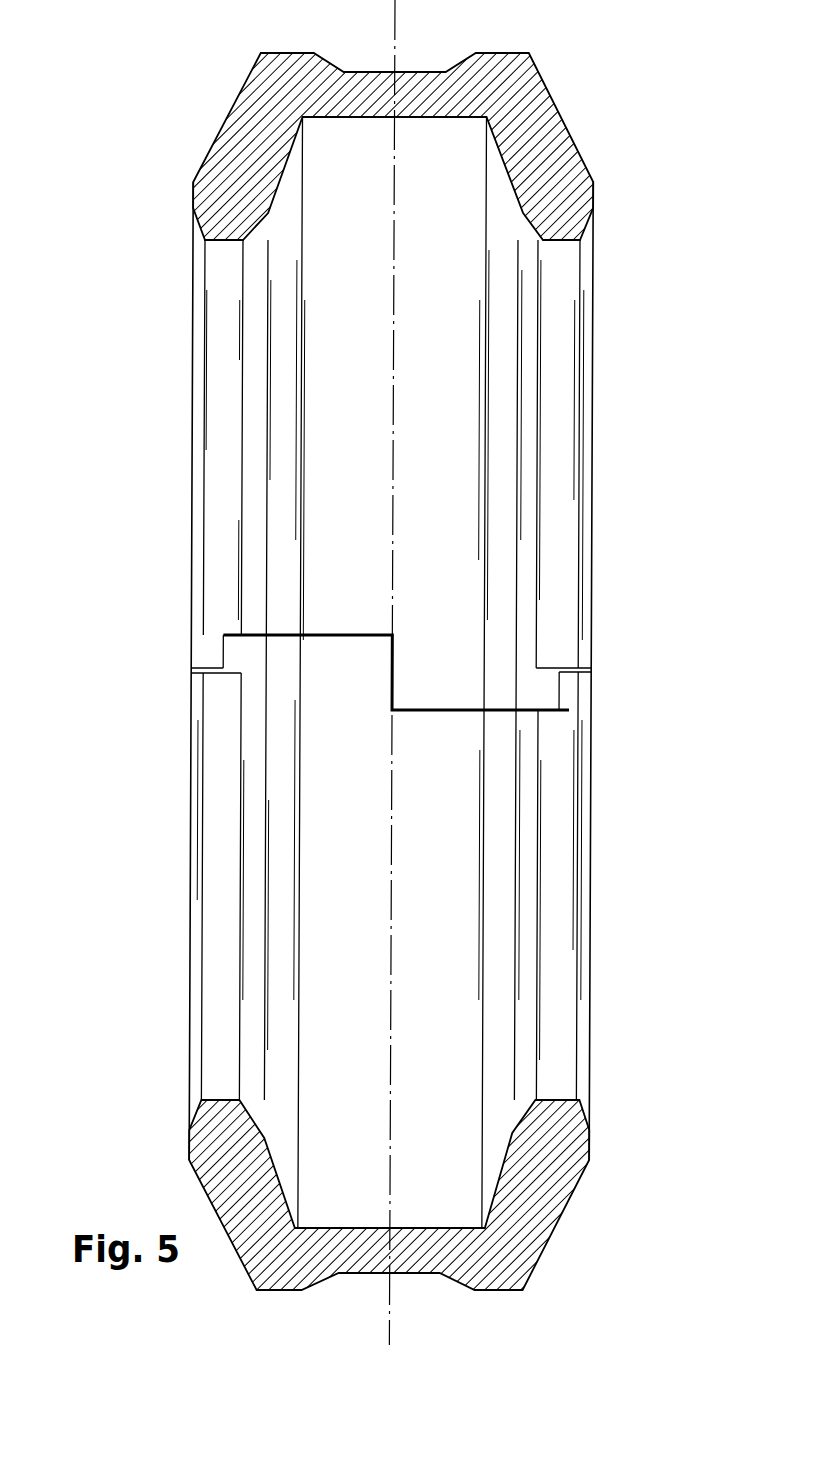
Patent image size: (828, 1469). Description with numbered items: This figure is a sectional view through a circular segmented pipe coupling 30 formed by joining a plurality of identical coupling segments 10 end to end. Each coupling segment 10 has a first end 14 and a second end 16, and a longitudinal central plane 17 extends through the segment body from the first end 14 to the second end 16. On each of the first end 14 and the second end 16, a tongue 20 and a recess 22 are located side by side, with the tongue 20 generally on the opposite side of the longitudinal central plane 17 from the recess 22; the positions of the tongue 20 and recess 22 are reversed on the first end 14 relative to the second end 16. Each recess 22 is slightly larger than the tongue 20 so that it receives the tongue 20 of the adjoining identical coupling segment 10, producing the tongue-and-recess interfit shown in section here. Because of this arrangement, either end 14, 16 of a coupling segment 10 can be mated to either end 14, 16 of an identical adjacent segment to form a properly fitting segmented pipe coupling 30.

The coupling segment 10 is at (593, 288).
The first end 14 is at (193, 672).
The second end 16 is at (590, 670).
The longitudinal central plane 17 is at (395, 20).
The tongue 20 is at (231, 661).
The recess 22 is at (223, 637).
The segmented pipe coupling 30 is at (172, 375).